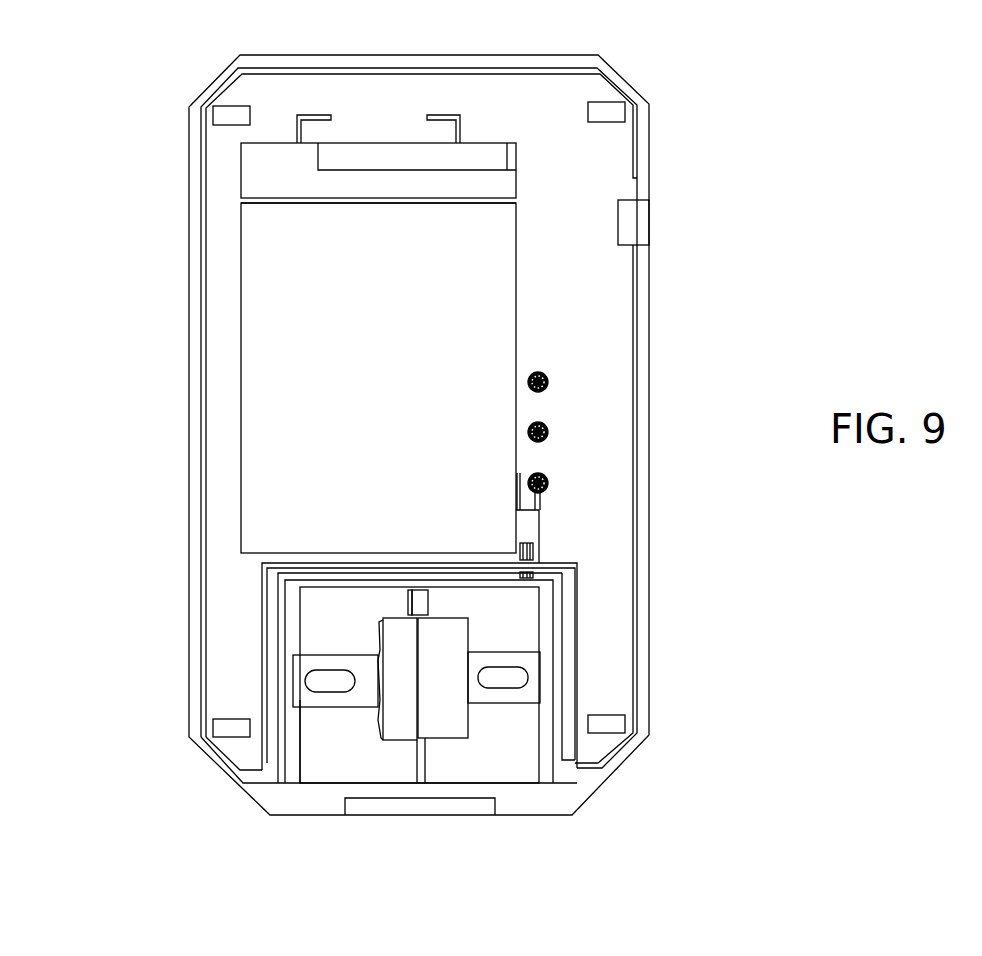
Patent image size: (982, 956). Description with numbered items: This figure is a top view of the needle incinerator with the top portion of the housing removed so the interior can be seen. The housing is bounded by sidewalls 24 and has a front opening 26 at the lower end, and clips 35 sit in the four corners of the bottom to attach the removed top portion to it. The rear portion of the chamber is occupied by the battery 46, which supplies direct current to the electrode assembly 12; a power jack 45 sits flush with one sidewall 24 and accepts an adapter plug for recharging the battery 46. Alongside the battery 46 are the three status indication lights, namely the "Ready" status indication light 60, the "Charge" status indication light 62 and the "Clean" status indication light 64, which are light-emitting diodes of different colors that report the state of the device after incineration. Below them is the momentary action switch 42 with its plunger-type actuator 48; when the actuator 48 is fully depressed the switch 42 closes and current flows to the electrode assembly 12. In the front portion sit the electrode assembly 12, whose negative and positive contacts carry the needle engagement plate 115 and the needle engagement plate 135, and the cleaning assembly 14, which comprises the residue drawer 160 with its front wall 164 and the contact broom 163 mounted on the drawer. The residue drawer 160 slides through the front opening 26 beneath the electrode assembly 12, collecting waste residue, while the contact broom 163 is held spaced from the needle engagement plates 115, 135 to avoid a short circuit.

The electrode assembly 12 is at (478, 730).
The cleaning assembly 14 is at (338, 758).
The sidewalls 24 is at (645, 162).
The front opening 26 is at (565, 760).
The clips 35 is at (227, 117).
The momentary action switch 42 is at (532, 524).
The power jack 45 is at (640, 207).
The battery 46 is at (485, 278).
The plunger-type actuator 48 is at (538, 573).
The "Ready" status indication light 60 is at (550, 373).
The "Charge" status indication light 62 is at (548, 423).
The "Clean" status indication light 64 is at (548, 473).
The needle engagement plate 115 is at (460, 633).
The needle engagement plate 135 is at (397, 628).
The residue drawer 160 is at (550, 610).
The contact broom 163 is at (432, 603).
The front wall 164 is at (525, 803).